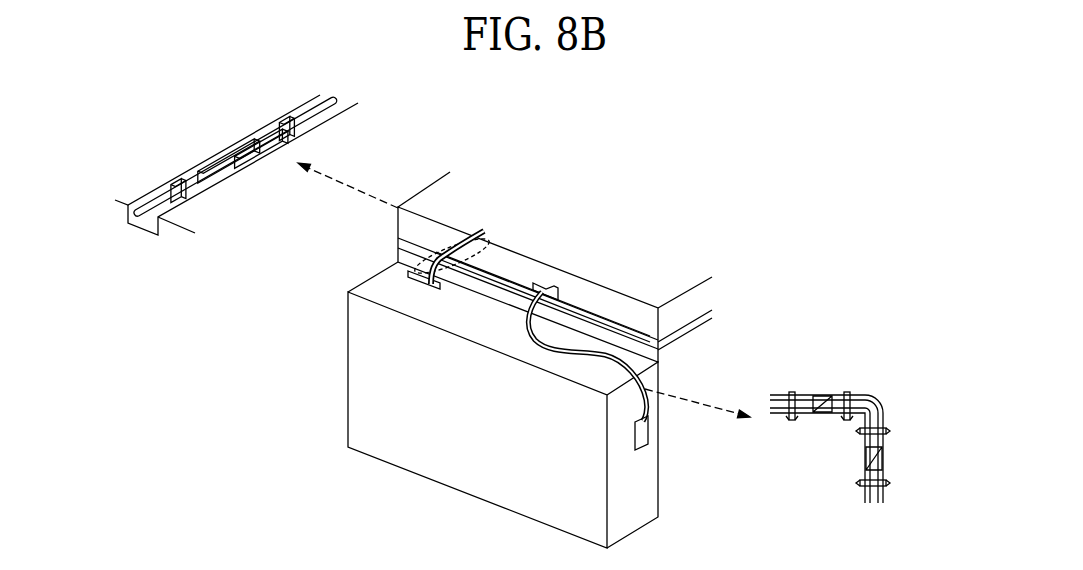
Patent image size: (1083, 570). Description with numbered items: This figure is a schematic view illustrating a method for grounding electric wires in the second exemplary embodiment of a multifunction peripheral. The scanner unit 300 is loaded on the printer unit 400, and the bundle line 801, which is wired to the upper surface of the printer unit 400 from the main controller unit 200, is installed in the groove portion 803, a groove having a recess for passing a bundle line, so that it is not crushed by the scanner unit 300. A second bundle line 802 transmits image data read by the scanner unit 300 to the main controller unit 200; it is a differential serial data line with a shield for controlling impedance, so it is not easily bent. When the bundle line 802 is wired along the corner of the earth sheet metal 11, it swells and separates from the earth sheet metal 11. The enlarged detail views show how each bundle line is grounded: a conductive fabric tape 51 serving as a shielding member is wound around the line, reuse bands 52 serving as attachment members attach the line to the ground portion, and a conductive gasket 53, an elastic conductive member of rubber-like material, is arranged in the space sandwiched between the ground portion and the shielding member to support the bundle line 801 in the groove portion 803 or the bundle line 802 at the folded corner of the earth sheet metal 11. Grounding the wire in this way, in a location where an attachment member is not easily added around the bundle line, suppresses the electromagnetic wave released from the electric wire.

The earth sheet metal 11 is at (862, 492).
The conductive fabric tape 51 is at (313, 96).
The reuse band 52 is at (280, 118).
The conductive gasket 53 is at (227, 150).
The main controller unit 200 is at (455, 358).
The scanner unit 300 is at (683, 306).
The printer unit 400 is at (702, 360).
The bundle line 801 is at (480, 232).
The bundle line 802 is at (600, 346).
The groove portion 803 is at (148, 223).